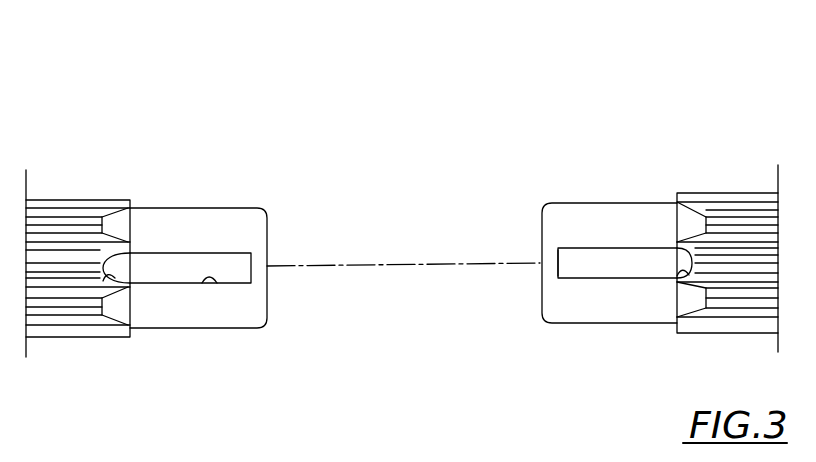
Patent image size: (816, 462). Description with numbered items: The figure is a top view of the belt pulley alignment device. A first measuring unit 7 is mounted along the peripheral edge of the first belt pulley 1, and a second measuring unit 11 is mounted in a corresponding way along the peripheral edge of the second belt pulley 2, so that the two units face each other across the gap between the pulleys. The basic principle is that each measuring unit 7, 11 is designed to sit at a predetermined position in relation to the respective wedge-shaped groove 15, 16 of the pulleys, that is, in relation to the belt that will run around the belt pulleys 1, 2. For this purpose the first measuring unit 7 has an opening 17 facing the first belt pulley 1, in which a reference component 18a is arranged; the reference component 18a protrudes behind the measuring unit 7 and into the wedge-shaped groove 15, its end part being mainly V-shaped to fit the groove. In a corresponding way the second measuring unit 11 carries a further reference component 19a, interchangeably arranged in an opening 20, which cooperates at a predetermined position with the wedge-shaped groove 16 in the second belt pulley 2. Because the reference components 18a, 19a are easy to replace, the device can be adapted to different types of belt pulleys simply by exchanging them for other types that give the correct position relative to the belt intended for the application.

The first belt pulley 1 is at (700, 198).
The second belt pulley 2 is at (103, 200).
The first measuring unit 7 is at (592, 213).
The second measuring unit 11 is at (203, 210).
The wedge-shaped groove 15 is at (712, 290).
The wedge-shaped groove 16 is at (108, 277).
The opening 17 is at (595, 280).
The reference component 18a is at (662, 280).
The further reference component 19a is at (138, 277).
The opening 20 is at (202, 283).